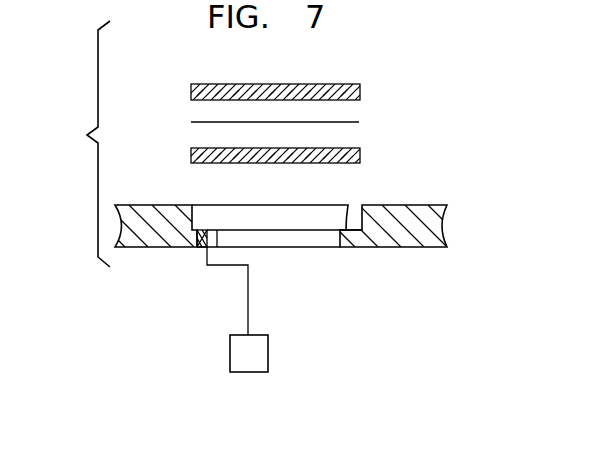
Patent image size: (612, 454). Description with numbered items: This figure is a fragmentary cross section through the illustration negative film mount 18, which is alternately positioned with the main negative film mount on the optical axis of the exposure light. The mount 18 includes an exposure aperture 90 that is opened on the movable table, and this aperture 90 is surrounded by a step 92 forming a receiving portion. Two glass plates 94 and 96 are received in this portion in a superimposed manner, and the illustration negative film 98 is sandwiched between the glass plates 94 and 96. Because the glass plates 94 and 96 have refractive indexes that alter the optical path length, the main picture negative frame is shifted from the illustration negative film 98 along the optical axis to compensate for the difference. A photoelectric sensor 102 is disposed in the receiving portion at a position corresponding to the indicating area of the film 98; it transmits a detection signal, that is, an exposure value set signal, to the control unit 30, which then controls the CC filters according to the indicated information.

The illustration negative film mount 18 is at (267, 221).
The control unit 30 is at (268, 349).
The exposure aperture 90 is at (338, 238).
The step 92 is at (347, 211).
The glass plate 94 is at (361, 156).
The glass plate 96 is at (344, 84).
The illustration negative film 98 is at (350, 122).
The photoelectric sensor 102 is at (199, 248).